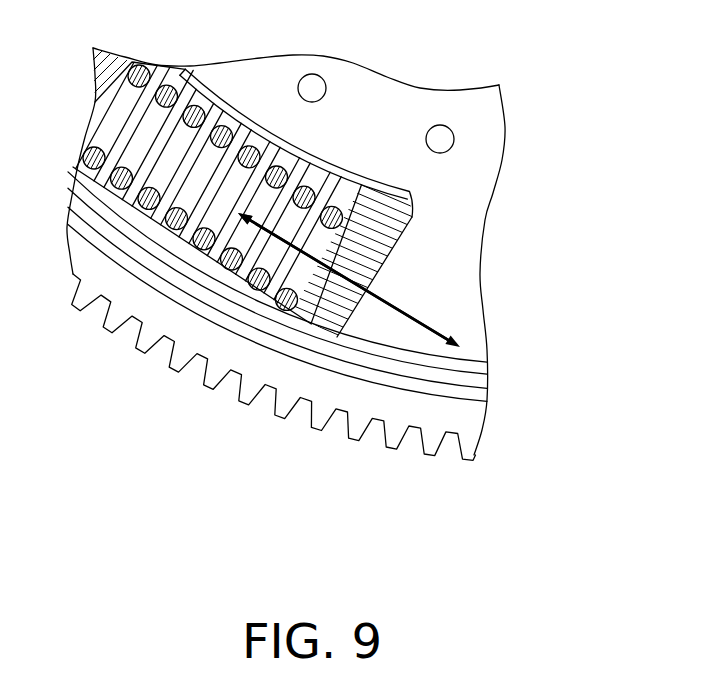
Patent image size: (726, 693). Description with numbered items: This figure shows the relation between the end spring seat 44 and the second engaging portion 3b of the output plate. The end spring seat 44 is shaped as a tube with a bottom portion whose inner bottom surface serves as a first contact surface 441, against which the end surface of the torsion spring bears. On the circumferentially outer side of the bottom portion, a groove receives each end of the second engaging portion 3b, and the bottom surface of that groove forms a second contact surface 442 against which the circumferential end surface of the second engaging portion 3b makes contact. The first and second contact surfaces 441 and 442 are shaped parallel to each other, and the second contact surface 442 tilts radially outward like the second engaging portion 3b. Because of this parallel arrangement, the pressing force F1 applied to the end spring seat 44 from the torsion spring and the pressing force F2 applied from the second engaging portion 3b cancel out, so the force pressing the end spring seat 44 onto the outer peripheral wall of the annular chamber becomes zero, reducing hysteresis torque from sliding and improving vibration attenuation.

The second engaging portion 3b is at (427, 340).
The end spring seat 44 is at (400, 262).
The first contact surface 441 is at (300, 260).
The second contact surface 442 is at (380, 278).
The pressing force F1 is at (403, 290).
The pressing force F2 is at (273, 240).